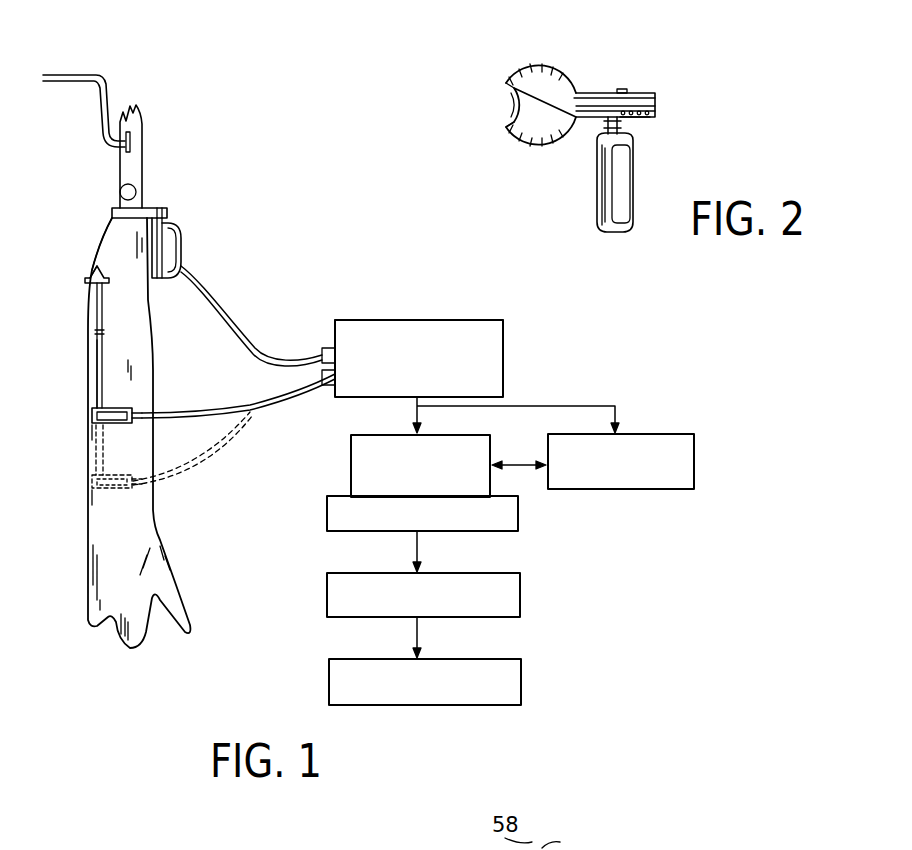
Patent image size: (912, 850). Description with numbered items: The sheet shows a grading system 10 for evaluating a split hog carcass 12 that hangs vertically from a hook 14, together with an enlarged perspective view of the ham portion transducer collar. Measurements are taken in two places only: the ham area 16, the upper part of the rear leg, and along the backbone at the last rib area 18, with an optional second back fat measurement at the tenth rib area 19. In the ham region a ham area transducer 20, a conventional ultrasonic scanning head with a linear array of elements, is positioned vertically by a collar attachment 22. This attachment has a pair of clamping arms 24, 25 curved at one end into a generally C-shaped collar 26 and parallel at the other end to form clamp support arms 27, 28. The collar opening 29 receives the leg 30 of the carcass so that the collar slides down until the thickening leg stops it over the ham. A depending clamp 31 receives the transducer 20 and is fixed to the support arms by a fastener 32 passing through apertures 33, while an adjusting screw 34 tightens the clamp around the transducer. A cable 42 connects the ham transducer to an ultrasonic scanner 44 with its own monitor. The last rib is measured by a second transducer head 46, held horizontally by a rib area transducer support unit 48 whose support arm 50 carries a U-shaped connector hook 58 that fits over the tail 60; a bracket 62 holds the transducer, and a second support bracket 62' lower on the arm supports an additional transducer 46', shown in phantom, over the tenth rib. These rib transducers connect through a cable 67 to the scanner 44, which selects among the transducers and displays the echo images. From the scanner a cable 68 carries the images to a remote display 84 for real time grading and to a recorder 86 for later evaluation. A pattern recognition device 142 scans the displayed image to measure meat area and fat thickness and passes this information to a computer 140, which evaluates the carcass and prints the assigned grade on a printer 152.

In FIG. 1, the grading system 10 is at (396, 298).
In FIG. 1, the hog carcass 12 is at (82, 557).
In FIG. 1, the hook 14 is at (80, 74).
In FIG. 1, the ham area 16 is at (112, 243).
In FIG. 1, the last rib area 18 is at (87, 437).
In FIG. 1, the tenth rib area 19 is at (90, 500).
In FIG. 1, the ham area transducer 20 is at (182, 243).
In FIG. 1, the collar attachment 22 is at (165, 205).
In FIG. 2, the collar attachment 22 is at (581, 130).
In FIG. 2, the clamping arm 24 is at (522, 140).
In FIG. 2, the upper clamp jaw 25 is at (533, 68).
In FIG. 2, the C-shaped collar 26 is at (518, 103).
In FIG. 2, the clamp support arm 27 is at (655, 96).
In FIG. 2, the clamp support arm 28 is at (640, 120).
In FIG. 2, the collar opening 29 is at (508, 90).
In FIG. 1, the leg 30 is at (132, 165).
In FIG. 2, the depending clamp 31 is at (633, 226).
In FIG. 2, the fastener 32 is at (612, 117).
In FIG. 2, the apertures 33 is at (655, 112).
In FIG. 2, the adjusting screw 34 is at (605, 134).
In FIG. 1, the cable 42 is at (207, 300).
In FIG. 1, the ultrasonic scanner 44 is at (465, 319).
In FIG. 1, the second transducer head 46 is at (224, 385).
In FIG. 1, the additional transducer 46' is at (187, 470).
In FIG. 1, the rib area transducer support unit 48 is at (90, 341).
In FIG. 1, the support arm 50 is at (97, 366).
In FIG. 1, the connector hook 58 is at (90, 290).
In FIG. 1, the tail 60 is at (85, 275).
In FIG. 1, the bracket 62 is at (96, 430).
In FIG. 1, the second support bracket 62' is at (91, 460).
In FIG. 1, the cable 67 is at (248, 413).
In FIG. 1, the cable 68 is at (412, 412).
In FIG. 1, the remote display 84 is at (351, 462).
In FIG. 1, the recorder 86 is at (694, 458).
In FIG. 1, the computer 140 is at (520, 600).
In FIG. 1, the pattern recognition device 142 is at (518, 510).
In FIG. 1, the printer 152 is at (521, 680).